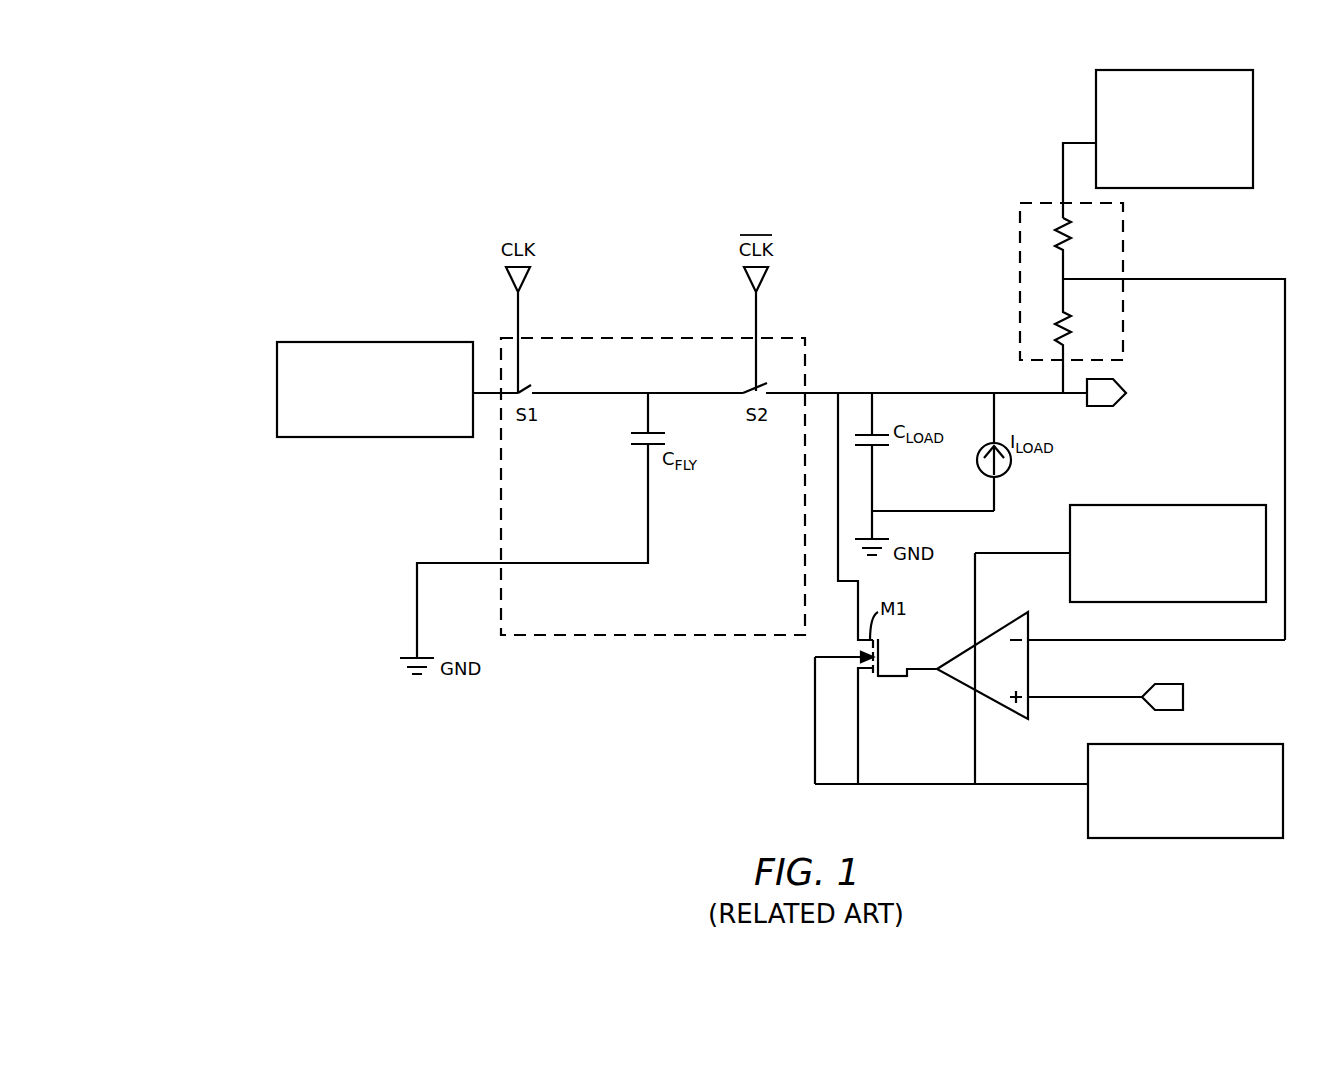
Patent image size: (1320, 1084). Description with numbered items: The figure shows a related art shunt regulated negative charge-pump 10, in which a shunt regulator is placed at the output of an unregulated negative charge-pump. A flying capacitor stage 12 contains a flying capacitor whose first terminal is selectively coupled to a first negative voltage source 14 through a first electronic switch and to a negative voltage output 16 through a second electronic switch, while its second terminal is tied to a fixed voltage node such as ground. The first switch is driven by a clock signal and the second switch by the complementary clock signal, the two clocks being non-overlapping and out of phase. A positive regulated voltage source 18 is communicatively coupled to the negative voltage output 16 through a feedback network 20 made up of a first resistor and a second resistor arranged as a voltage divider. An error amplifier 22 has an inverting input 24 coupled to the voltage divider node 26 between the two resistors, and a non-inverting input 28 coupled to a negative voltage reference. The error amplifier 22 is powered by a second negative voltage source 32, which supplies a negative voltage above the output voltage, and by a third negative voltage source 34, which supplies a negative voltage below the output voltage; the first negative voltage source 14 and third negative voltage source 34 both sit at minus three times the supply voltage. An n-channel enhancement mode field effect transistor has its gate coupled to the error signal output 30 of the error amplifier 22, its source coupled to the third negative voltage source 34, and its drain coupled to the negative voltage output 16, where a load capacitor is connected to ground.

The shunt regulated negative charge-pump 10 is at (880, 176).
The flying capacitor stage 12 is at (763, 606).
The first negative voltage source 14 is at (364, 431).
The negative voltage output 16 is at (1107, 406).
The positive regulated voltage source 18 is at (1163, 183).
The feedback network 20 is at (1038, 203).
The error amplifier 22 is at (976, 678).
The inverting input 24 is at (1093, 641).
The voltage divider node 26 is at (1064, 279).
The non-inverting input 28 is at (1088, 698).
The error signal output 30 is at (915, 676).
The second negative voltage source 32 is at (1157, 595).
The third negative voltage source 34 is at (1174, 832).